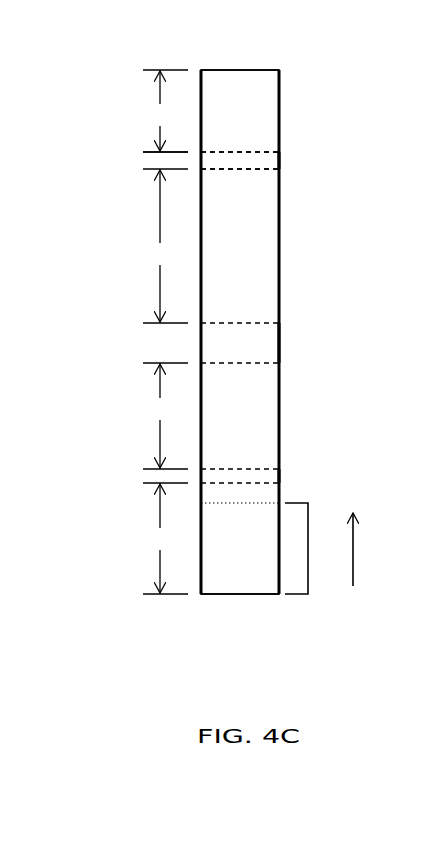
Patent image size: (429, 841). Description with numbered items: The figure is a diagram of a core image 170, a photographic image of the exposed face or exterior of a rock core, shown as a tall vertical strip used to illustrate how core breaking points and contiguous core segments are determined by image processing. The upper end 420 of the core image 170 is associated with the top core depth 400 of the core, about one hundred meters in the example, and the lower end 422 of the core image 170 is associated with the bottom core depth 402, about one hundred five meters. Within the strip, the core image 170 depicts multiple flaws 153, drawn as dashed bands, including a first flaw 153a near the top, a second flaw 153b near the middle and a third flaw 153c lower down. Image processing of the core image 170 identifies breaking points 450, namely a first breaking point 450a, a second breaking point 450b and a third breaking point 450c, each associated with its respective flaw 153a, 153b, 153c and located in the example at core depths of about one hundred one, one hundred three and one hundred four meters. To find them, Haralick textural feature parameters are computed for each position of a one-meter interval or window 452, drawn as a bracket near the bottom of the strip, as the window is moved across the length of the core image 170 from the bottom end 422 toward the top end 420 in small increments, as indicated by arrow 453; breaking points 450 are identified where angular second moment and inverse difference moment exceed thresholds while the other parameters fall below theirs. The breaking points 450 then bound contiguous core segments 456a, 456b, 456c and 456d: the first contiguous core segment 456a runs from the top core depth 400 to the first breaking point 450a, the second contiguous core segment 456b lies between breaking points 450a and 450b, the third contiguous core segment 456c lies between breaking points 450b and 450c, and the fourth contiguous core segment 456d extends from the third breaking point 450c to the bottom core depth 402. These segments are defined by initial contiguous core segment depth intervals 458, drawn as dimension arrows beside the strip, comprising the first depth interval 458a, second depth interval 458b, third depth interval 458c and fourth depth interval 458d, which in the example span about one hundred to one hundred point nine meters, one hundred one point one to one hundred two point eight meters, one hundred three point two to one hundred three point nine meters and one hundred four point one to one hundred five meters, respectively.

The core image 170 is at (244, 55).
The top core depth 400 is at (141, 70).
The bottom core depth 402 is at (141, 593).
The top end of the core image 420 is at (292, 67).
The bottom end of the core image 422 is at (288, 599).
The breaking points 450 is at (95, 132).
The first breaking point 450a is at (147, 160).
The second breaking point 450b is at (159, 342).
The third breaking point 450c is at (147, 480).
The interval (window) 452 is at (308, 548).
The arrow 453 is at (356, 549).
The first contiguous core segment 456a is at (240, 126).
The second contiguous core segment 456b is at (240, 246).
The third contiguous core segment 456c is at (240, 416).
The fourth contiguous core segment 456d is at (240, 517).
The contiguous core segment depth intervals 458 is at (110, 101).
The first contiguous core segment depth interval 458a is at (158, 111).
The second contiguous core segment depth interval 458b is at (158, 246).
The third contiguous core segment depth interval 458c is at (157, 416).
The fourth contiguous core segment depth interval 458d is at (160, 538).
The flaws 153 is at (240, 160).
The first flaw 153a is at (290, 161).
The second flaw 153b is at (286, 341).
The third flaw 153c is at (286, 476).